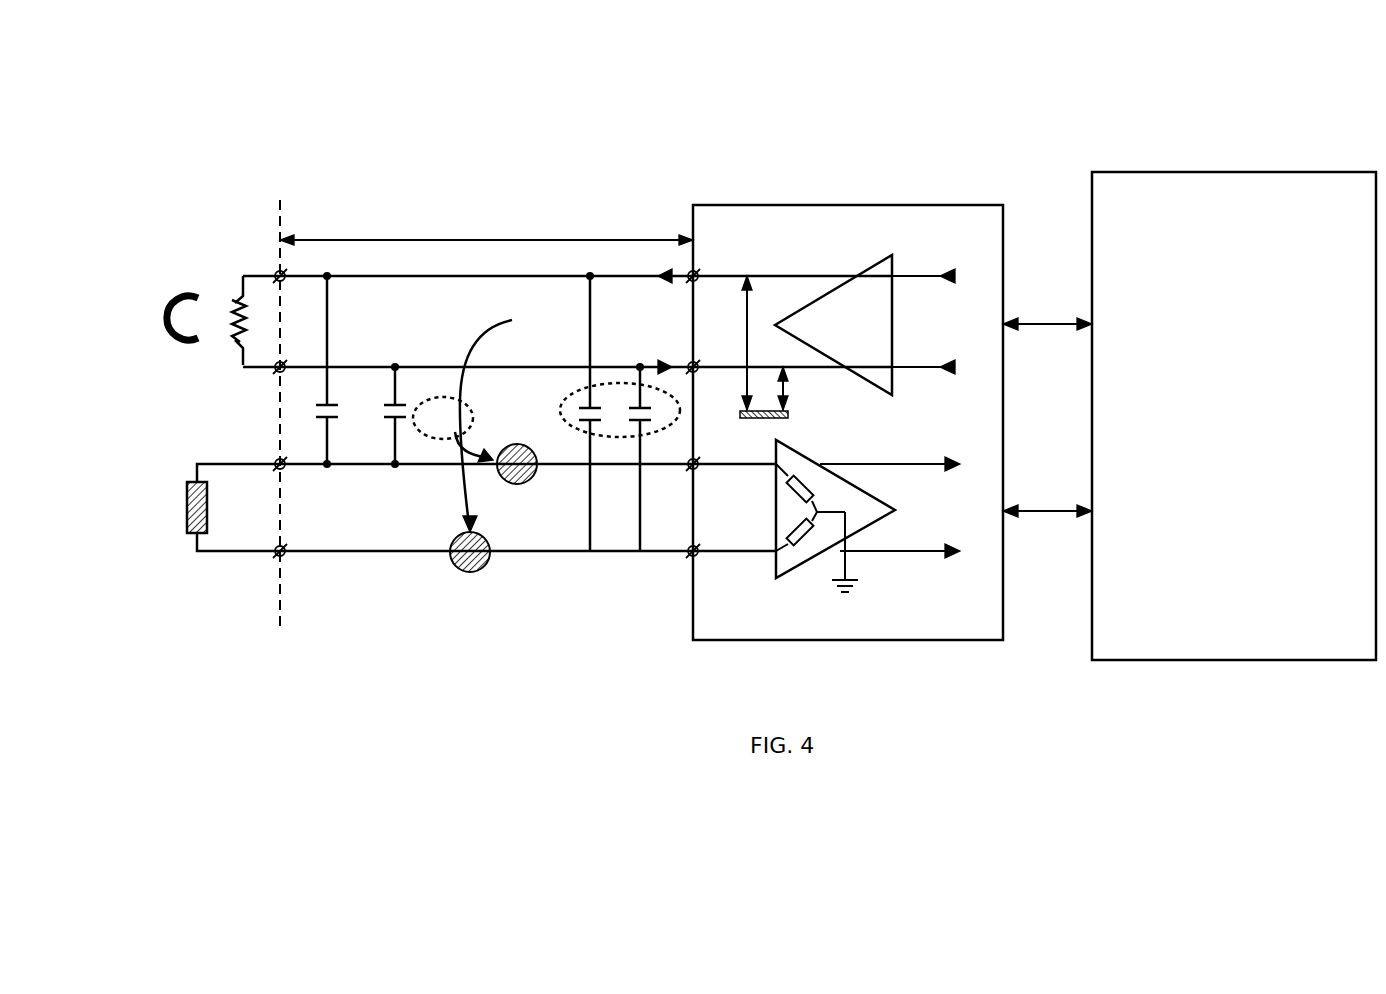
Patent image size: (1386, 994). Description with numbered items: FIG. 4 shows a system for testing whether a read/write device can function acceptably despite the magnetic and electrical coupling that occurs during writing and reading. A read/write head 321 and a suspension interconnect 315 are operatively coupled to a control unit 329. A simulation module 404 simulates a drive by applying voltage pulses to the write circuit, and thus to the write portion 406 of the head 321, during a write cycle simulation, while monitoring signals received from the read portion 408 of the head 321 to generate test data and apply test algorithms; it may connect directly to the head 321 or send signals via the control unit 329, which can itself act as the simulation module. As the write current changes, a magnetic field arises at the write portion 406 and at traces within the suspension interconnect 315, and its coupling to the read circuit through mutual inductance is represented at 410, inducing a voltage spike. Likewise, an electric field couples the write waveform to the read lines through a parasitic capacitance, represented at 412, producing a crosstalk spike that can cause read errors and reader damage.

The read/write head 321 is at (207, 650).
The suspension interconnect 315 is at (487, 660).
The control unit 329 is at (767, 205).
The simulation module 404 is at (1150, 172).
The write portion 406 is at (215, 290).
The read portion 408 is at (187, 510).
The magnetic field coupling 410 is at (432, 398).
The electrical coupling 412 is at (612, 385).